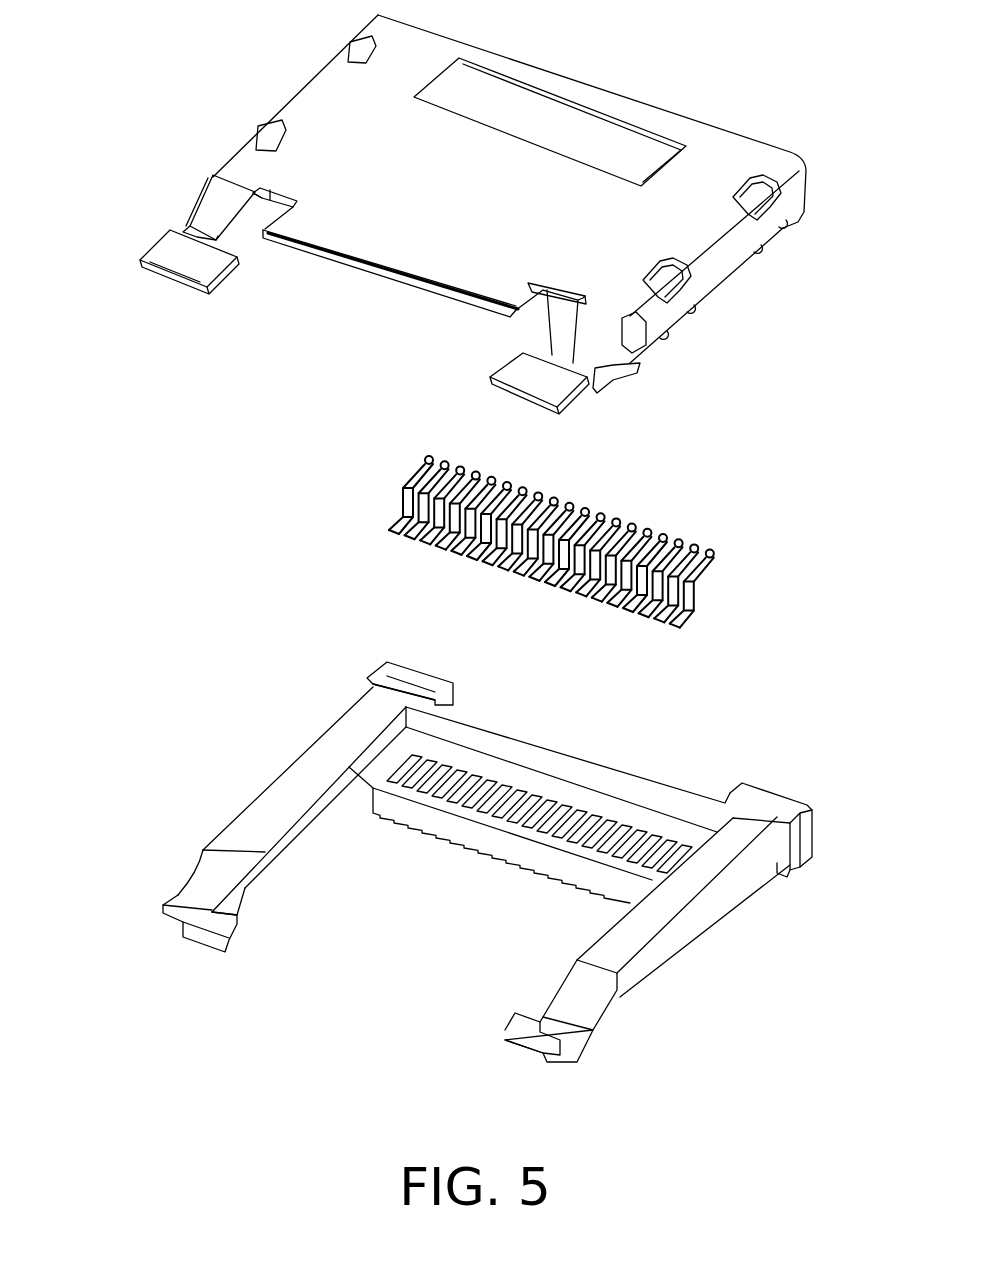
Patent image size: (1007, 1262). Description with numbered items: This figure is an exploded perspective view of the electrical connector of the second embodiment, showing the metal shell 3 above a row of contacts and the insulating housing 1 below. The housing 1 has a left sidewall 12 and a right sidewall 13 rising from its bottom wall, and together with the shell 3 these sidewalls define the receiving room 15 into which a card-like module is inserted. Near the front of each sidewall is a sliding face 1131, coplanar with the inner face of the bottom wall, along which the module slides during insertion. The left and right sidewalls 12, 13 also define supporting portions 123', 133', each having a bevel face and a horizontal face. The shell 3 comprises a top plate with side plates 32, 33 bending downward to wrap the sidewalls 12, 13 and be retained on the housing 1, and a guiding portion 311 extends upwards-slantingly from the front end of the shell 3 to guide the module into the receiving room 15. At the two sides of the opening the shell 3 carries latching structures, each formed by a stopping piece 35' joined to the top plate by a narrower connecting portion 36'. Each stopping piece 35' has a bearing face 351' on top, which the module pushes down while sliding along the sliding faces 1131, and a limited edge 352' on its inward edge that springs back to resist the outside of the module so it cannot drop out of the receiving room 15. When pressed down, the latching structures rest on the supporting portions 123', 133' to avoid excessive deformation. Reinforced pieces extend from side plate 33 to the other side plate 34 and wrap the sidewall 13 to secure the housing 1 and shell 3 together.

The metal shell 3 is at (262, 76).
The side plate 32 is at (302, 82).
The side plate 33 is at (718, 280).
The side plate 34 is at (676, 320).
The guiding portion 311 is at (458, 292).
The connecting portion 36' is at (174, 193).
The stopping piece 35' is at (182, 310).
The bearing face 351' is at (186, 328).
The limited edge 352' is at (243, 274).
The insulating housing 1 is at (264, 752).
The left sidewall 12 is at (333, 752).
The right sidewall 13 is at (693, 878).
The supporting portion 123' is at (167, 854).
The sliding face 1131 is at (257, 878).
The receiving room 15 is at (522, 915).
The supporting portion 133' is at (589, 1040).